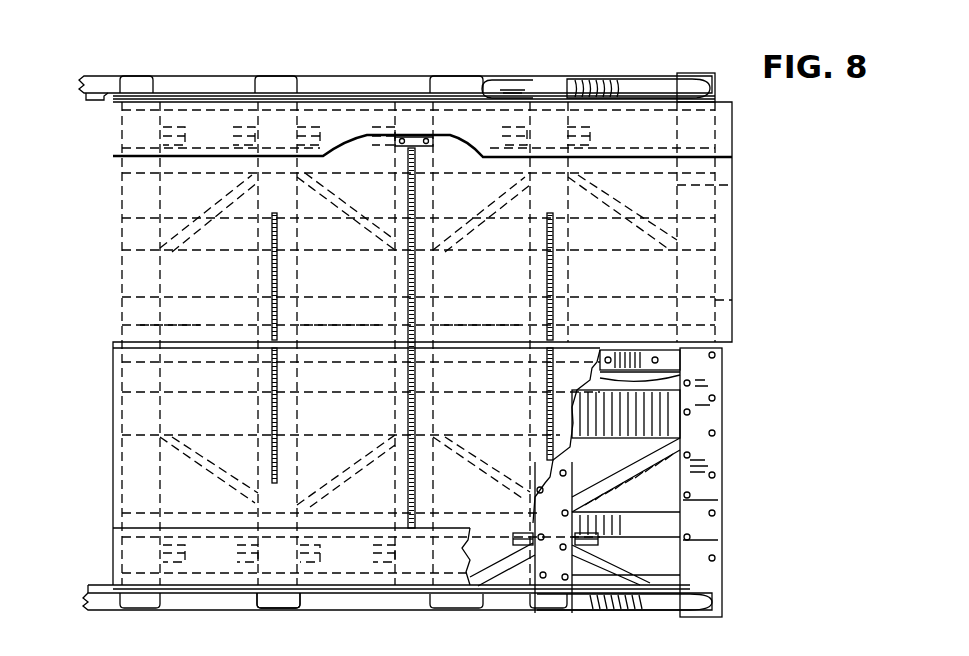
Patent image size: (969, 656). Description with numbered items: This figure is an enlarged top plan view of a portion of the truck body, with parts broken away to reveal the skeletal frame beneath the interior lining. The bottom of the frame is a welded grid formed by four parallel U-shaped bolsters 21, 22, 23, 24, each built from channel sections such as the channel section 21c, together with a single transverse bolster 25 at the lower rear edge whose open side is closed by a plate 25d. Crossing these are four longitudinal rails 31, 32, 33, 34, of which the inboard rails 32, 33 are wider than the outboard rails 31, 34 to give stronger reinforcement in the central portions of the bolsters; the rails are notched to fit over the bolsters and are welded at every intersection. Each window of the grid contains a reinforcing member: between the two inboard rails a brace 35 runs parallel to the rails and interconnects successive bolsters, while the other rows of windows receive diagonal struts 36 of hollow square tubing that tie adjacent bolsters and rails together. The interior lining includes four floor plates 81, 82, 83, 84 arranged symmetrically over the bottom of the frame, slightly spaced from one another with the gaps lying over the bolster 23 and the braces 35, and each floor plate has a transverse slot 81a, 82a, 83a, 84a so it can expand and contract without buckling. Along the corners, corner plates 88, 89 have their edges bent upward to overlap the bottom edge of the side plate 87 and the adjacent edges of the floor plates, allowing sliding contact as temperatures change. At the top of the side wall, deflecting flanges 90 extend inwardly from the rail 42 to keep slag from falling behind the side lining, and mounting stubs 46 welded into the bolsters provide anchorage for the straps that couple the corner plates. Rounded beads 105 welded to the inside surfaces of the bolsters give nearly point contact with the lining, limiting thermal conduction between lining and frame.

The front bolster 21 is at (136, 611).
The channel section 21c is at (135, 76).
The bolster 22 is at (283, 608).
The bolster 23 is at (416, 610).
The bolster 24 is at (553, 610).
The transverse bolster 25 is at (710, 617).
The plate 25d is at (700, 545).
The longitudinal rail 31 is at (725, 510).
The longitudinal rail 32 is at (690, 440).
The longitudinal rail 33 is at (700, 300).
The longitudinal rail 34 is at (700, 185).
The brace 35 is at (190, 322).
The diagonal strut 36 is at (235, 115).
The rail 42 is at (203, 74).
The mounting stub 46 is at (443, 127).
The floor plate 81 is at (113, 210).
The transverse slot 81a is at (278, 283).
The floor plate 82 is at (113, 425).
The transverse slot 82a is at (278, 415).
The floor plate 83 is at (732, 210).
The transverse slot 83a is at (555, 283).
The floor plate 84 is at (640, 378).
The transverse slot 84a is at (547, 410).
The side plate 87 is at (485, 80).
The corner plate 88 is at (113, 552).
The corner plate 89 is at (113, 130).
The deflecting flange 90 is at (543, 88).
The bead 105 is at (690, 472).